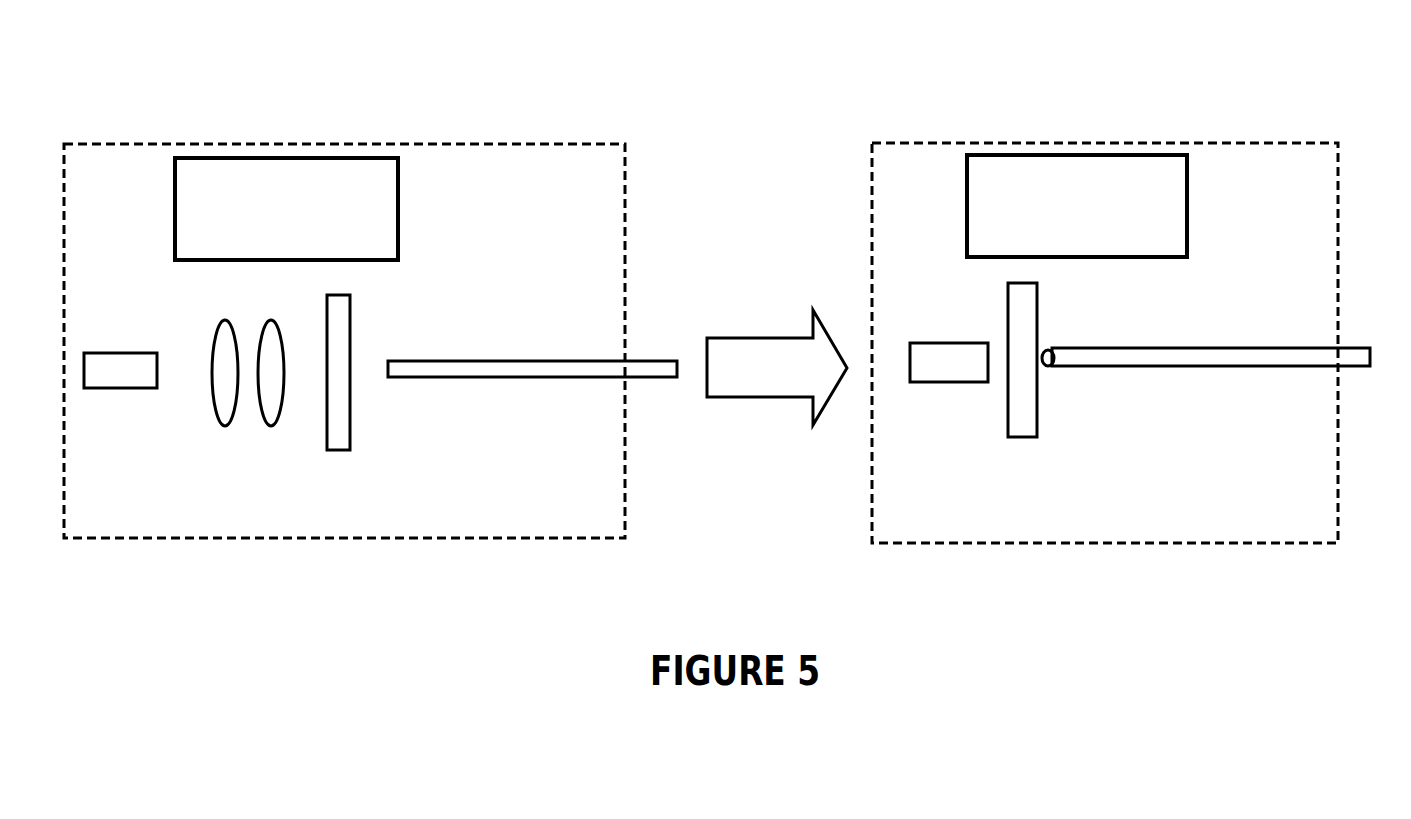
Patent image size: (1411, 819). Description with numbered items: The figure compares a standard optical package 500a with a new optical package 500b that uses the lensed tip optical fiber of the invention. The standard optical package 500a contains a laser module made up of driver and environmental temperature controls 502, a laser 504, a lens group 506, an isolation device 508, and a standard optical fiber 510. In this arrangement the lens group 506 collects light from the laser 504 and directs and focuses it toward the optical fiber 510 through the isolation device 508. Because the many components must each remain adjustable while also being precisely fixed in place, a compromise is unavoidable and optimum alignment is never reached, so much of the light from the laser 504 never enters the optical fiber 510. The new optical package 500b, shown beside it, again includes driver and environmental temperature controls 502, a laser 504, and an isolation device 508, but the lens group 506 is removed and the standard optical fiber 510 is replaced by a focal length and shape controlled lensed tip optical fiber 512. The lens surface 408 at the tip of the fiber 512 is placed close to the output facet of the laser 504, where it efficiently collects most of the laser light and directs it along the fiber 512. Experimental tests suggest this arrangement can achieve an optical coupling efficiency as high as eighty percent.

The standard optical package 500a is at (630, 129).
The new optical package 500b is at (1305, 127).
The driver and environmental temperature controls 502 is at (398, 222).
The laser 504 is at (118, 353).
The lens group 506 is at (290, 447).
The isolation device 508 is at (350, 325).
The standard optical fiber 510 is at (525, 360).
The lensed tip optical fiber 512 is at (1160, 367).
The lens surface 408 is at (1046, 348).